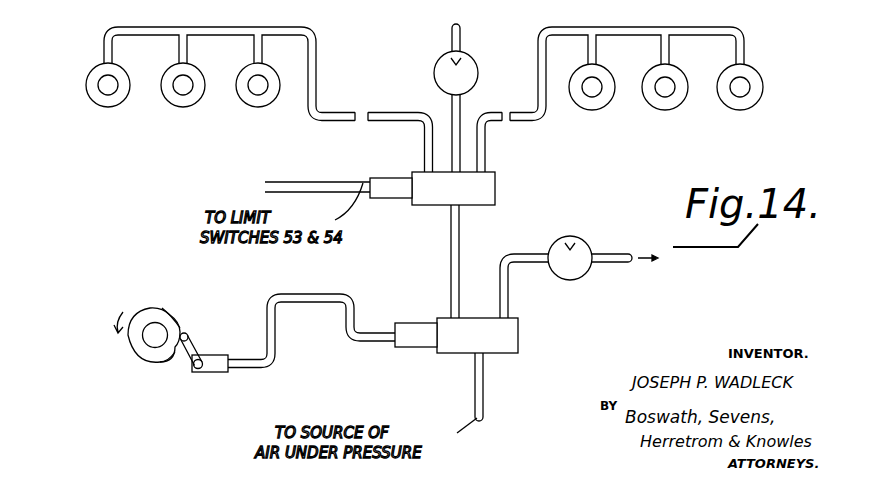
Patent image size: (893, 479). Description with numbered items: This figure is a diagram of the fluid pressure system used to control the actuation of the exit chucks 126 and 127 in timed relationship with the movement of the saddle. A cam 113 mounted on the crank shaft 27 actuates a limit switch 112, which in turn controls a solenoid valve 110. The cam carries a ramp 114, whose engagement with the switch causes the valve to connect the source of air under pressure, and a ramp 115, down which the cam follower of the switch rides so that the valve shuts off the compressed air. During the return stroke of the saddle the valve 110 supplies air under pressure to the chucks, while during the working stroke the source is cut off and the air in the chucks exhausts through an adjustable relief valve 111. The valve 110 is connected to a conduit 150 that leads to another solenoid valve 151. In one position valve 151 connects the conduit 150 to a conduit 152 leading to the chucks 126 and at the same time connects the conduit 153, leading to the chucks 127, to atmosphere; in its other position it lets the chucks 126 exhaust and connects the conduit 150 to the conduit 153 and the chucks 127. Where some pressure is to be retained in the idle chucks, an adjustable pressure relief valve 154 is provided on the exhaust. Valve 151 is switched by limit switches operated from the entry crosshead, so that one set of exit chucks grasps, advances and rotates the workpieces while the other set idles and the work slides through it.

The exit chucks 126 is at (98, 97).
The exit chucks 127 is at (598, 100).
The conduit 152 is at (327, 110).
The conduit 153 is at (485, 115).
The adjustable pressure relief valve 154 is at (467, 63).
The solenoid valve 151 is at (495, 186).
The conduit 150 is at (461, 247).
The adjustable pressure relief valve 111 is at (584, 246).
The solenoid valve 110 is at (465, 342).
The limit switch 112 is at (215, 365).
The cam 113 is at (142, 307).
The ramp 114 is at (168, 358).
The ramp 115 is at (163, 307).
The crank shaft 27 is at (150, 338).